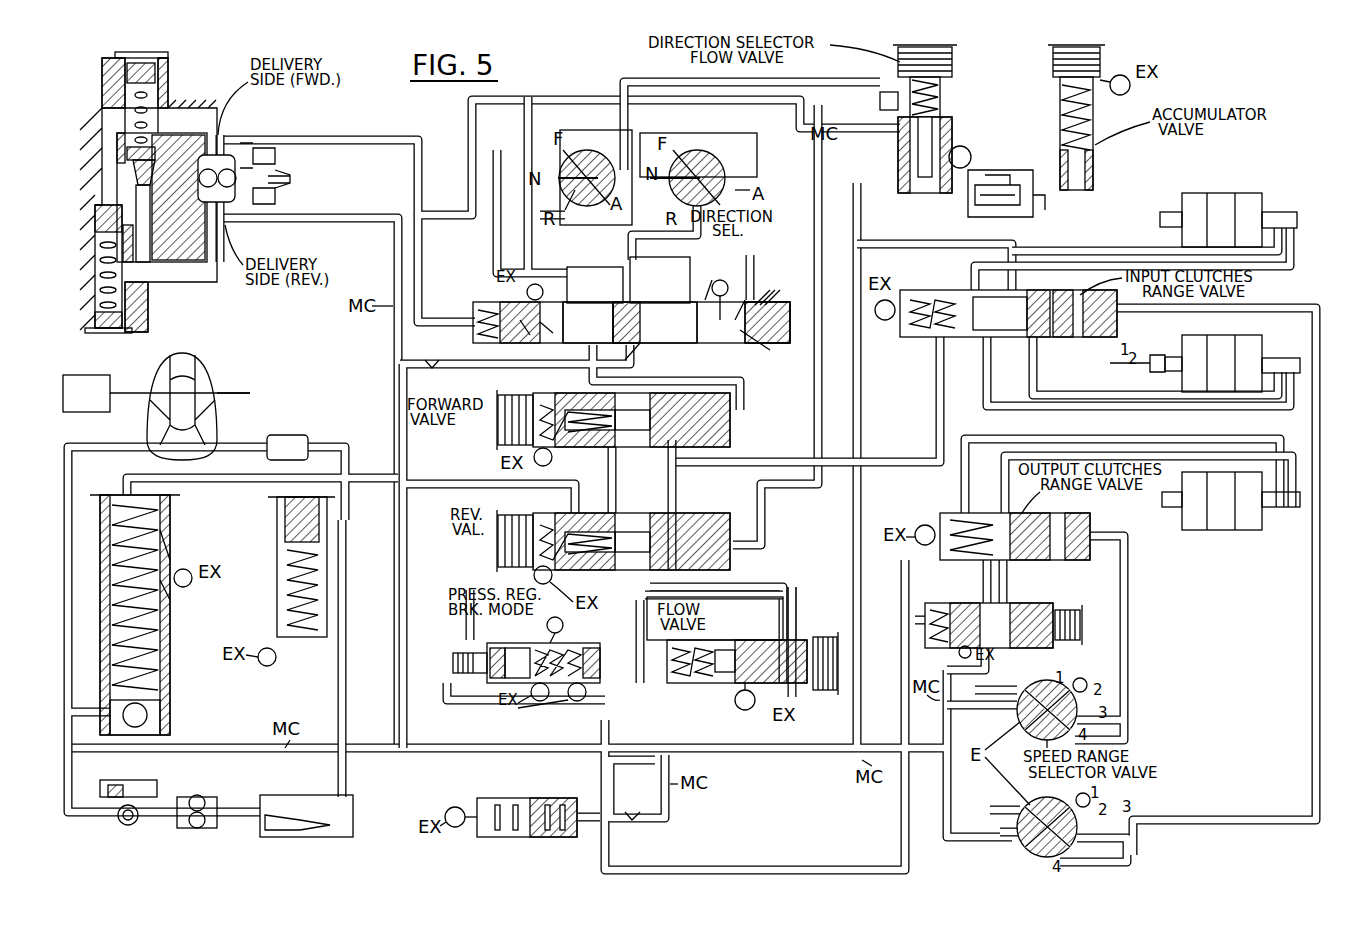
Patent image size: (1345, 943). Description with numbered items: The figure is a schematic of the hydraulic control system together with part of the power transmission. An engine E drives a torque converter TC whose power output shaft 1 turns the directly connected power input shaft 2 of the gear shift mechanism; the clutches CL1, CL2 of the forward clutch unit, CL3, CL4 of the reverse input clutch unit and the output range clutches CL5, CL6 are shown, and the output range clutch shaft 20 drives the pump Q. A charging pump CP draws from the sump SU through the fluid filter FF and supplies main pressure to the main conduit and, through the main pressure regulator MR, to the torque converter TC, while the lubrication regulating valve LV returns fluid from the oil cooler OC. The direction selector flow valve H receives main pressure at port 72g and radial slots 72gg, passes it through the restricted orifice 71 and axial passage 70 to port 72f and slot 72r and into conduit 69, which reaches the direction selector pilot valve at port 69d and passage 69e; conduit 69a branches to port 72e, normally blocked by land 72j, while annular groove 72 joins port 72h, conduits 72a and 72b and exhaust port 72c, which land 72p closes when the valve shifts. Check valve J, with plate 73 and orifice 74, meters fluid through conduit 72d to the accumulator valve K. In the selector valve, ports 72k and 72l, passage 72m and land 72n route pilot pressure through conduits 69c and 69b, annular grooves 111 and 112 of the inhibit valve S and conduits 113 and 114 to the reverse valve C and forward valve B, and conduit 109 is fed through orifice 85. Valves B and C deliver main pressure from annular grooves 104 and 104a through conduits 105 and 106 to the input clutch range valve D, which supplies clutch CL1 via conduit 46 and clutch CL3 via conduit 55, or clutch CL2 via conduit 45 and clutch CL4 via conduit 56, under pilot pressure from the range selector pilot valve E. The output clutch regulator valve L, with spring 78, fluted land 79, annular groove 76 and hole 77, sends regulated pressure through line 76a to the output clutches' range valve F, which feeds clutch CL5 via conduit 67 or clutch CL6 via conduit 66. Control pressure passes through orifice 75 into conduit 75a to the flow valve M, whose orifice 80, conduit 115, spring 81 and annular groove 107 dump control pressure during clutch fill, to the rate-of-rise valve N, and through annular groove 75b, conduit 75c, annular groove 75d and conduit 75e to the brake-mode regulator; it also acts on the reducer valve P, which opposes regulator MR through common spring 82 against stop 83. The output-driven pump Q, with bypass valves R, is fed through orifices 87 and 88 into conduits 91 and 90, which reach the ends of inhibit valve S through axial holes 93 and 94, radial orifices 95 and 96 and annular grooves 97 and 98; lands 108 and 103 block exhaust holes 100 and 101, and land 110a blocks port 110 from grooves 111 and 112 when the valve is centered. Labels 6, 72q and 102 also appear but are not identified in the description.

The power output shaft 1 is at (228, 392).
The power input shaft 2 is at (1282, 358).
The shaft 6 is at (1162, 215).
The output range clutch shaft 20 is at (1168, 507).
The conduit 45 is at (1284, 240).
The conduit 46 is at (1144, 259).
The conduit 55 is at (1062, 392).
The conduit 56 is at (1000, 404).
The conduit 66 is at (1292, 452).
The conduit 67 is at (1228, 438).
The conduit 69 is at (850, 84).
The conduit 69a is at (880, 100).
The conduit 69b is at (520, 133).
The conduit 69c is at (583, 247).
The port 69d is at (612, 160).
The passage 69e is at (590, 150).
The axial center passage 70 is at (912, 155).
The restricted orifice 71 is at (940, 195).
The annular groove 72 is at (935, 135).
The conduit 72a is at (778, 132).
The conduit 72b is at (1000, 135).
The exhaust port 72c is at (978, 156).
The conduit 72d is at (1050, 214).
The port 72e is at (955, 115).
The port 72f is at (950, 85).
The port 72g is at (905, 195).
The radial slots 72gg is at (920, 195).
The port 72h is at (900, 140).
The land 72j is at (895, 124).
The port 72k is at (556, 217).
The port 72l is at (580, 152).
The passage 72m is at (698, 169).
The land 72n is at (560, 178).
The land 72p is at (565, 190).
The conduit 72q is at (1100, 188).
The slot 72r is at (955, 60).
The plate 73 is at (1020, 185).
The orifice 74 is at (995, 205).
The orifice 75 is at (632, 810).
The conduit 75a is at (593, 773).
The annular groove 75b is at (612, 393).
The conduit 75c is at (570, 492).
The annular groove 75d is at (609, 576).
The conduit 75e is at (539, 659).
The annular groove 76 is at (1000, 603).
The line 76a is at (982, 571).
The radial and axial hole 77 is at (1010, 612).
The spring 78 is at (932, 648).
The fluted land 79 is at (1020, 648).
The inlet orifice 80 is at (797, 587).
The spring 81 is at (675, 683).
The common spring 82 is at (172, 600).
The stop 83 is at (172, 541).
The orifice 85 is at (431, 351).
The orifice 87 is at (278, 156).
The orifice 88 is at (278, 196).
The conduit 90 is at (352, 224).
The conduit 91 is at (360, 136).
The axial hole 93 is at (548, 343).
The axial hole 94 is at (787, 338).
The radial orifice hole 95 is at (527, 300).
The radial orifice 96 is at (742, 300).
The annular groove 97 is at (525, 345).
The annular groove 98 is at (765, 351).
The exhaust hole 100 is at (512, 239).
The exhaust hole 101 is at (729, 289).
The spring 102 is at (777, 285).
The land 103 is at (706, 298).
The annular groove 104 is at (690, 445).
The annular groove 104a is at (684, 520).
The conduit 105 is at (937, 388).
The conduit 106 is at (893, 336).
The annular groove 107 is at (755, 690).
The land 108 is at (570, 280).
The conduit 109 is at (483, 378).
The port 110 is at (633, 285).
The land 110a is at (640, 318).
The annular groove 111 is at (646, 361).
The annular groove 112 is at (588, 322).
The conduit 113 is at (768, 510).
The conduit 114 is at (745, 393).
The conduit 115 is at (735, 590).
The bypass valves R is at (135, 176).
The output driven fluid pump Q is at (200, 192).
The engine E is at (88, 372).
The torque converter TC is at (192, 358).
The oil cooler OC is at (282, 435).
The main pressure regulator reducer valve P is at (172, 522).
The main pressure regulator MR is at (165, 682).
The lubrication circuit regulating valve LV is at (280, 620).
The fluid filter FF is at (128, 826).
The fluid charging pump CP is at (208, 825).
The sump SU is at (338, 838).
The inhibit valve S is at (475, 310).
The forward valve B is at (498, 433).
The reverse valve C is at (545, 515).
The flow valve M is at (745, 640).
The rate-of-rise valve N is at (505, 800).
The direction selector flow valve H is at (952, 95).
The check valve J is at (1025, 170).
The accumulator valve K is at (1095, 125).
The input clutch range valve D is at (905, 337).
The output clutches' range valve F is at (945, 515).
The pressure regulator valve for output clutches L is at (935, 610).
The forward clutch CL1 is at (1198, 193).
The forward clutch CL2 is at (1250, 193).
The reverse input clutch CL3 is at (1198, 335).
The reverse input clutch CL4 is at (1240, 335).
The high output range clutch CL5 is at (1197, 530).
The low range output clutch CL6 is at (1250, 530).